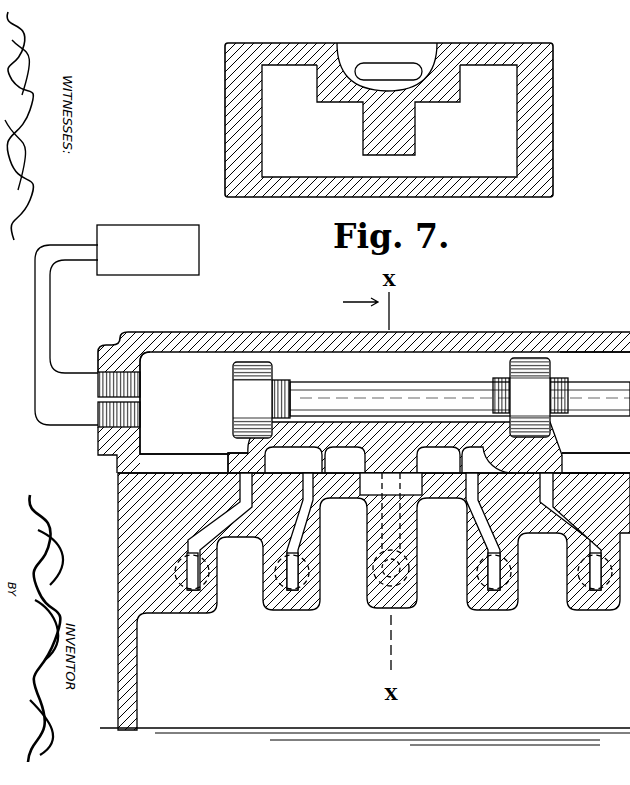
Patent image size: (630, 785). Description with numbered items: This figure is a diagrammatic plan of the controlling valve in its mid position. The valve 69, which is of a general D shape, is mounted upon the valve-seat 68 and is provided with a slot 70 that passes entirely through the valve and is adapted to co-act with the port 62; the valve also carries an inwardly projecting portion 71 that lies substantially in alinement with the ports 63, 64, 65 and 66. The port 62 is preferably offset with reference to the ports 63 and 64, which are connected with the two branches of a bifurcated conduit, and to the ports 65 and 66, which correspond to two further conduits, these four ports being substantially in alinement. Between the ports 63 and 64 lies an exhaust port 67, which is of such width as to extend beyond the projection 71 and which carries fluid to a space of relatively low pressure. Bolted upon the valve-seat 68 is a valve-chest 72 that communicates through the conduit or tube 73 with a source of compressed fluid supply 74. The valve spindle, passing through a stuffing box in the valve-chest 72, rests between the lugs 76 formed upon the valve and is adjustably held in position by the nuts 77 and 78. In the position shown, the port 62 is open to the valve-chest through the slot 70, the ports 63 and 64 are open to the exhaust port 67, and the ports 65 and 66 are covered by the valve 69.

The port 62 is at (397, 540).
The port 63 is at (310, 487).
The port 64 is at (477, 487).
The port 65 is at (560, 468).
The port 66 is at (233, 455).
The exhaust port 67 is at (377, 492).
The valve-seat 68 is at (173, 472).
The valve 69 is at (535, 137).
The slot 70 is at (377, 68).
The inwardly projecting portion 71 is at (372, 130).
The valve-chest 72 is at (172, 368).
The conduit or tube 73 is at (40, 312).
The source of compressed fluid supply 74 is at (133, 242).
The lugs 76 is at (445, 370).
The nut 77 is at (247, 397).
The nut 78 is at (535, 393).